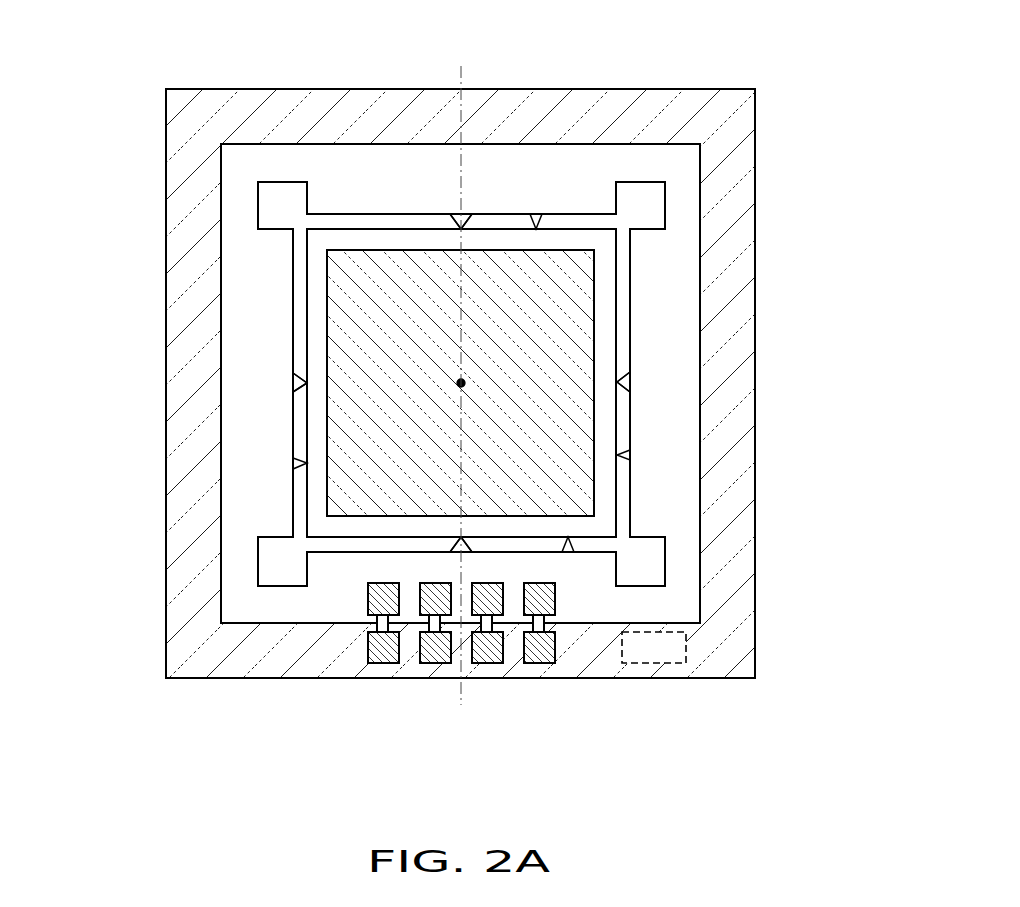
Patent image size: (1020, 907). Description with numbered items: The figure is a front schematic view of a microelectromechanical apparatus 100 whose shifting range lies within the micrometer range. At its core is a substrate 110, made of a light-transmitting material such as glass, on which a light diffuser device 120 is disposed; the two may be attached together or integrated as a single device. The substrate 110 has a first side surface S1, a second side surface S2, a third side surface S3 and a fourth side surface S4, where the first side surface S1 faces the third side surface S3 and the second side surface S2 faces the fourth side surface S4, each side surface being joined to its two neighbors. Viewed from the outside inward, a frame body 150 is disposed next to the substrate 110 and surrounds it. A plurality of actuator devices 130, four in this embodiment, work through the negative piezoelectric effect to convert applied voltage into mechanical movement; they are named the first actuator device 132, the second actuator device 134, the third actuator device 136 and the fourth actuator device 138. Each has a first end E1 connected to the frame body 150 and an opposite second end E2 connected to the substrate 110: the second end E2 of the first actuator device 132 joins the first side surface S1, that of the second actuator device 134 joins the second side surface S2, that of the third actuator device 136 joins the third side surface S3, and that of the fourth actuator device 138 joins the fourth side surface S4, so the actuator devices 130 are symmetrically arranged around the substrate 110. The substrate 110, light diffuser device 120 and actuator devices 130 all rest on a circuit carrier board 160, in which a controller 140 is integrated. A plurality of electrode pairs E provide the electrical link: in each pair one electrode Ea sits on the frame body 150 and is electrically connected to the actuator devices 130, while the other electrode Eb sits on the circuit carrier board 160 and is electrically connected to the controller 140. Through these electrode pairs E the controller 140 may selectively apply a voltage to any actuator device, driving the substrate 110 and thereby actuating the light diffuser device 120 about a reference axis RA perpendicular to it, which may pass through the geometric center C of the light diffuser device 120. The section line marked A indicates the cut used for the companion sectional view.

The microelectromechanical apparatus 100 is at (461, 406).
The substrate 110 is at (315, 265).
The light diffuser device 120 is at (353, 293).
The actuator devices 130 is at (461, 384).
The first actuator device 132 is at (477, 225).
The second actuator device 134 is at (312, 396).
The third actuator device 136 is at (461, 553).
The fourth actuator device 138 is at (630, 385).
The controller 140 is at (665, 664).
The frame body 150 is at (675, 304).
The circuit carrier board 160 is at (730, 258).
The electrode pairs E is at (401, 696).
The electrode Ea is at (380, 597).
The electrode Eb is at (373, 652).
The first end E1 is at (455, 222).
The second end E2 is at (475, 226).
The first side surface S1 is at (537, 226).
The second side surface S2 is at (293, 464).
The third side surface S3 is at (568, 551).
The fourth side surface S4 is at (630, 454).
The geometric center C is at (461, 383).
The reference axis RA is at (344, 260).
The section line A-A' A is at (453, 71).